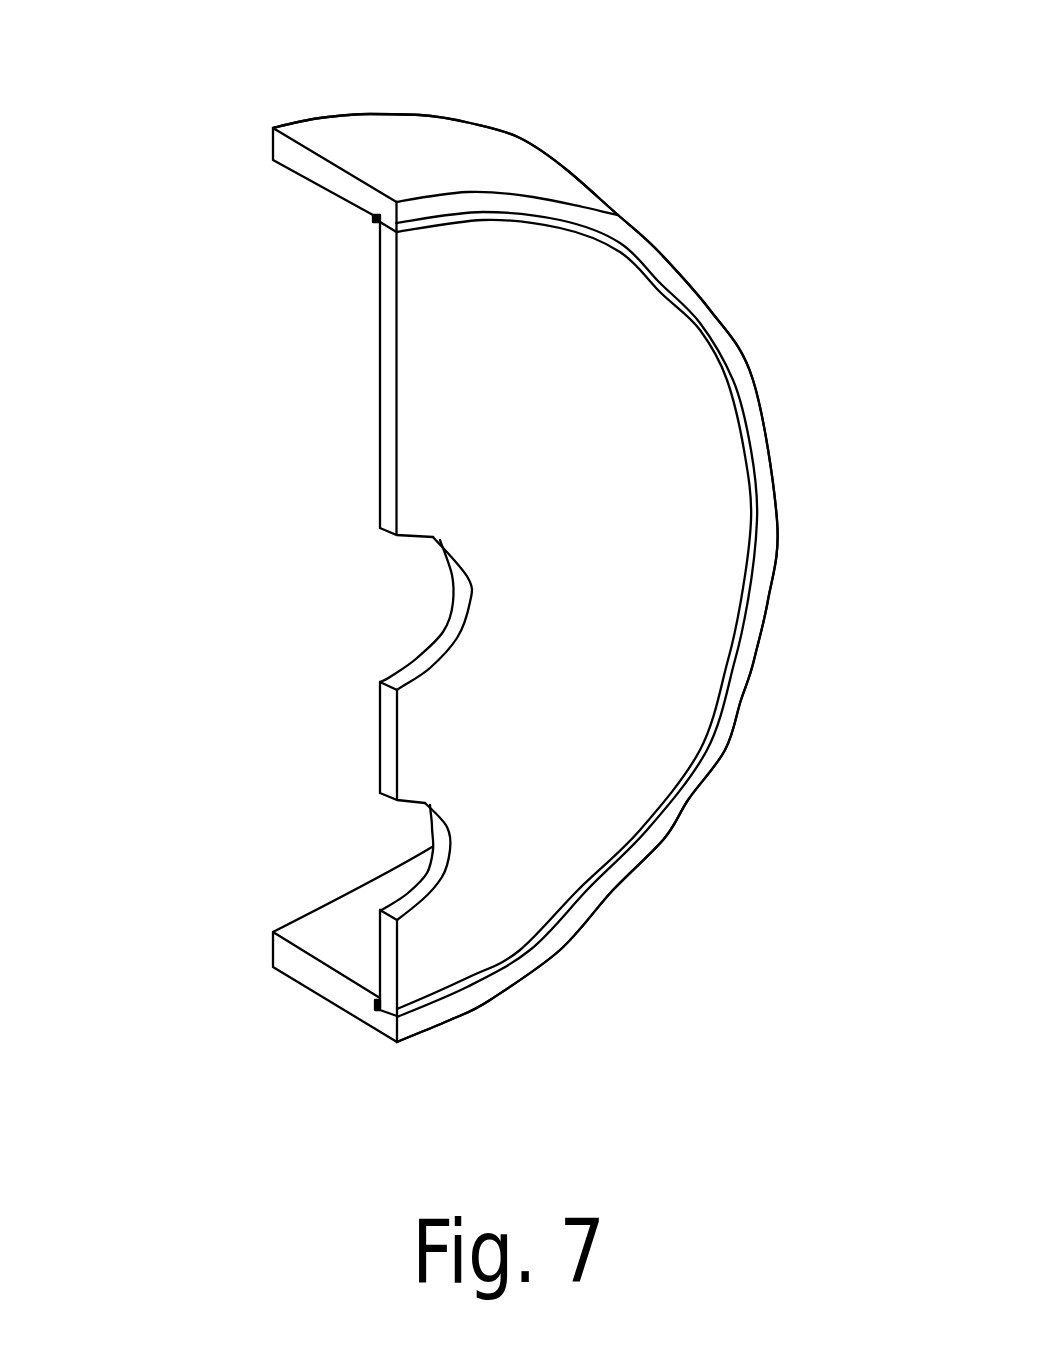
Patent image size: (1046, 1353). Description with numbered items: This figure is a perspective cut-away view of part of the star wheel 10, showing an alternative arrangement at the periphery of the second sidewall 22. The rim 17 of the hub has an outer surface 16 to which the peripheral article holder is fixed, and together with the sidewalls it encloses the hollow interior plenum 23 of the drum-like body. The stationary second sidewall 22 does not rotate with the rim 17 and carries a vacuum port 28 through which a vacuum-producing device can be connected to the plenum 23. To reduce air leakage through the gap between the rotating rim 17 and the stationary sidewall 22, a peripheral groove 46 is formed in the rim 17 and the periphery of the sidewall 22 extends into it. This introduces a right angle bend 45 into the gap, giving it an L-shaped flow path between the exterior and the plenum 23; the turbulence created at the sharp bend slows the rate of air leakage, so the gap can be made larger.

The star wheel 10 is at (188, 171).
The outer surface 16 is at (497, 157).
The rim 17 is at (670, 260).
The second sidewall 22 is at (643, 546).
The interior plenum 23 is at (352, 397).
The vacuum port 28 is at (447, 848).
The right angle bend 45 is at (373, 213).
The peripheral groove 46 is at (377, 1015).